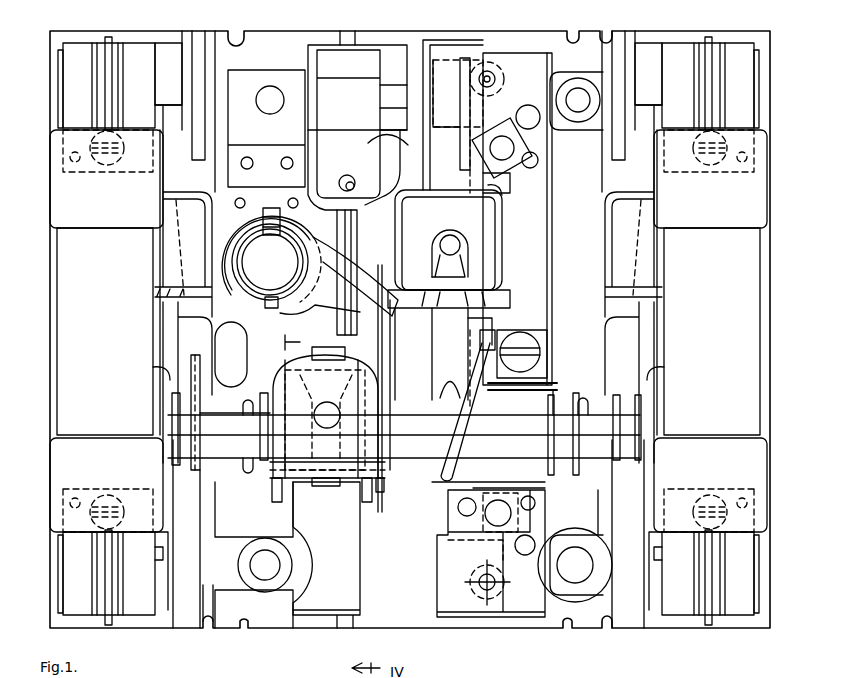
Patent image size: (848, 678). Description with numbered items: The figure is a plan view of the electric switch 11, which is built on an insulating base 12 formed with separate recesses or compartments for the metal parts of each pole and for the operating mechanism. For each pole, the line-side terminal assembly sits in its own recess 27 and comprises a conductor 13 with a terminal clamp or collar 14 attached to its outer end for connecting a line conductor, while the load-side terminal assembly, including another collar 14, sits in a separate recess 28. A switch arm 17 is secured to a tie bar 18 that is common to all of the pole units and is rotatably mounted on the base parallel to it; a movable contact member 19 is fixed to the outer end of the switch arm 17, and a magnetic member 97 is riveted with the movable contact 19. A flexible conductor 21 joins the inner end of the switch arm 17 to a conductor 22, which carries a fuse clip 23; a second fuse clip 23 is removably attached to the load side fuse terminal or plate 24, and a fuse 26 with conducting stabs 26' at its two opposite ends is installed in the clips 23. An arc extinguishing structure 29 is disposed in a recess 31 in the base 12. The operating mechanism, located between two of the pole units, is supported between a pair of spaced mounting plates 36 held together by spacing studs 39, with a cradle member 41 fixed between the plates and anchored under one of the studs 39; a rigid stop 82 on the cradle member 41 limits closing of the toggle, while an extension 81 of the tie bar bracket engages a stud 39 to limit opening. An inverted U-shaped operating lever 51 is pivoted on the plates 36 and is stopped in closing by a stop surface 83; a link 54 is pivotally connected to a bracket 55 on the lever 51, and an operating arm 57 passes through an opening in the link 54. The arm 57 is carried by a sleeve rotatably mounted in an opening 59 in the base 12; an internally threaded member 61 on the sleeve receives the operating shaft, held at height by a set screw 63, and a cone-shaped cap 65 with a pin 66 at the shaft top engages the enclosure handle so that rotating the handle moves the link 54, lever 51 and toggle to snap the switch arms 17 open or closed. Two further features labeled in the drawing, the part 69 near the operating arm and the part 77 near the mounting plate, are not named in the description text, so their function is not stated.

The switch 11 is at (400, 585).
The insulating base 12 is at (50, 328).
The conductor 13 is at (432, 263).
The terminal clamp or collar 14 is at (466, 60).
The switch arm 17 is at (456, 341).
The tie bar 18 is at (228, 418).
The movable contact member 19 is at (462, 262).
The flexible conductor 21 is at (480, 385).
The conductor 22 is at (519, 70).
The fuse clip 23 is at (78, 53).
The load side fuse terminal or plate 24 is at (538, 617).
The fuse 26 is at (699, 329).
The conducting stabs 26' is at (421, 330).
The recess 27 is at (430, 42).
The recess 28 is at (437, 628).
The arc extinguishing structure 29 is at (497, 219).
The recess 31 is at (497, 183).
The mounting plate 36 is at (280, 463).
The spacing stud 39 is at (285, 341).
The cradle member 41 is at (320, 487).
The operating lever 51 is at (275, 438).
The link 54 is at (379, 265).
The bracket 55 is at (379, 492).
The operating arm 57 is at (342, 290).
The opening 59 is at (240, 234).
The internally threaded member 61 is at (259, 228).
The set screw 63 is at (270, 207).
The cone-shaped cap 65 is at (287, 250).
The pin 66 is at (301, 210).
The cam surface 69 is at (283, 330).
The curved edge 77 is at (397, 145).
The extension 81 is at (328, 45).
The rigid stop 82 is at (367, 168).
The stop surface 83 is at (347, 238).
The magnetic member 97 is at (443, 267).